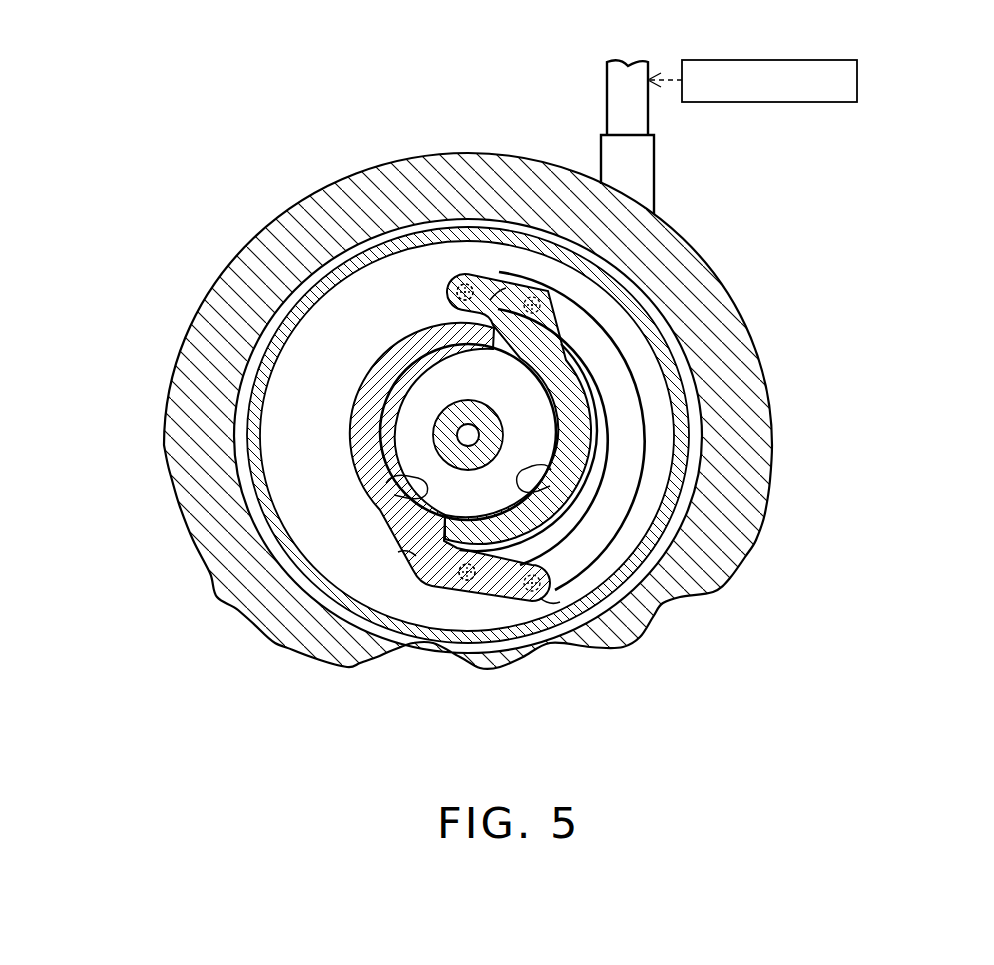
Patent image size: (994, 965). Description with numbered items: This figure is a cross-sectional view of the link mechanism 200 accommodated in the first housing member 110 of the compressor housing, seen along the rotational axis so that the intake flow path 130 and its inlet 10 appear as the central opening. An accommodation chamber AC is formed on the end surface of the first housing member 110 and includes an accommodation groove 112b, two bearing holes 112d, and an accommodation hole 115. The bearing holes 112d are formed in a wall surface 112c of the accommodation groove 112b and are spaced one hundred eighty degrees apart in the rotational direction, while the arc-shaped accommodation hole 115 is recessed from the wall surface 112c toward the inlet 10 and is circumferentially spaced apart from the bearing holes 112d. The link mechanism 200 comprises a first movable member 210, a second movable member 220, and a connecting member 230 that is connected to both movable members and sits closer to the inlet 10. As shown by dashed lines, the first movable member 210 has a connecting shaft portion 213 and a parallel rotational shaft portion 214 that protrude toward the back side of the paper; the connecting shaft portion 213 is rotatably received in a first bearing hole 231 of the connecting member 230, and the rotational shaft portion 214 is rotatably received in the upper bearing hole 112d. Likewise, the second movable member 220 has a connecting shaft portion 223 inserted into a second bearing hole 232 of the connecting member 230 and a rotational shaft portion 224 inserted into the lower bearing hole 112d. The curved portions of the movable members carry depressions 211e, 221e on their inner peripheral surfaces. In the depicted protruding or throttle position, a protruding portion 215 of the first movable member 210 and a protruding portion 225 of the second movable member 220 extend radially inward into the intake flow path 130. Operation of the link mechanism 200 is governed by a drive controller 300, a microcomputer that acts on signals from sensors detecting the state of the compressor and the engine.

The link mechanism 200 is at (236, 92).
The first housing member 110 is at (447, 152).
The accommodation hole 115 is at (680, 382).
The inlet 10 is at (529, 407).
The intake flow path 130 is at (490, 390).
The first movable member 210 is at (565, 335).
The second movable member 220 is at (400, 550).
The connecting member 230 is at (630, 445).
The first bearing hole 231 is at (545, 285).
The second bearing hole 232 is at (585, 617).
The connecting shaft portion 213 is at (556, 292).
The rotational shaft portion 214 is at (468, 272).
The protruding portion 215 is at (552, 470).
The connecting shaft portion 223 is at (540, 600).
The rotational shaft portion 224 is at (470, 588).
The protruding portion 225 is at (425, 482).
The depression 211e is at (595, 530).
The depression 221e is at (405, 556).
The bearing holes 112d is at (452, 296).
The accommodation groove 112b is at (335, 419).
The wall surface 112c is at (335, 449).
The accommodation chamber AC is at (336, 390).
The drive controller 300 is at (846, 64).